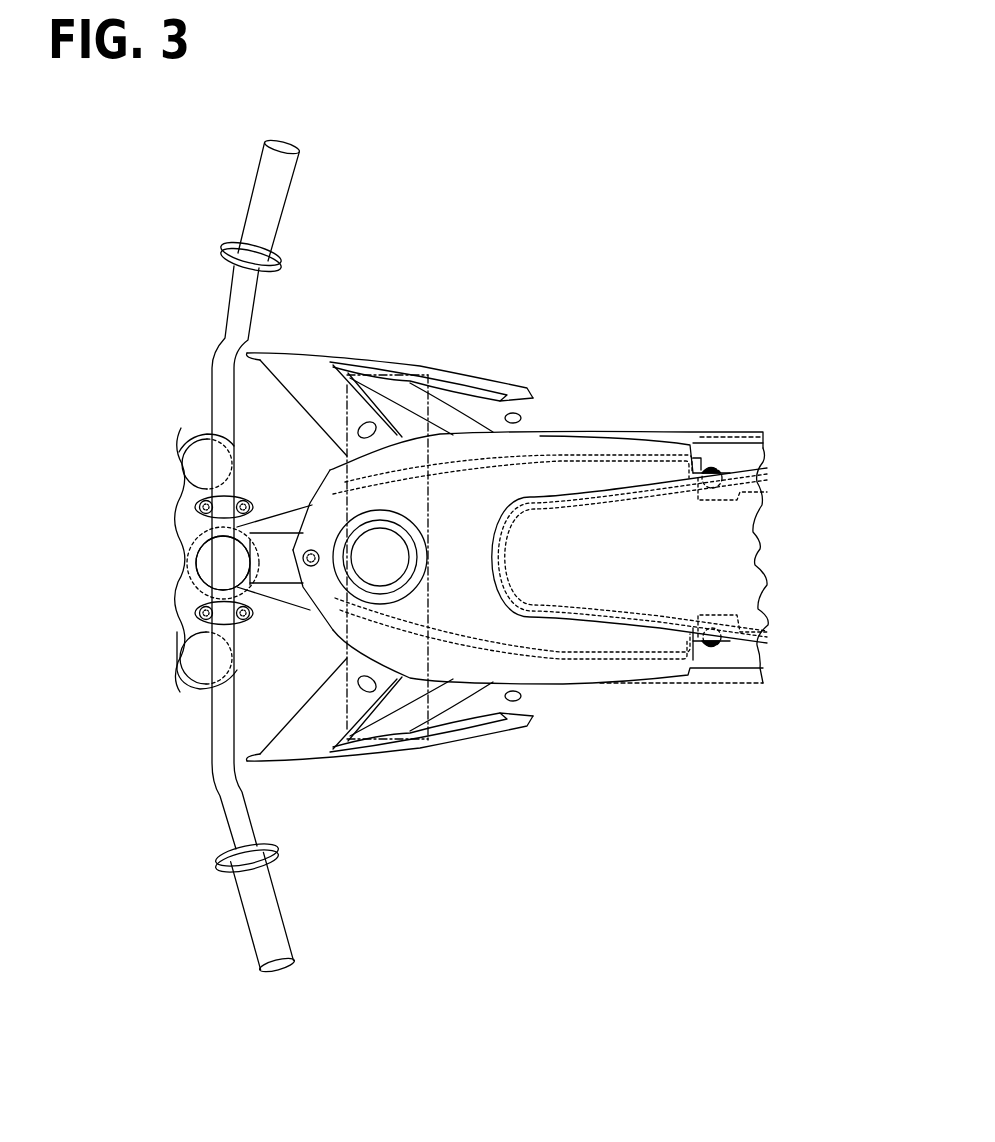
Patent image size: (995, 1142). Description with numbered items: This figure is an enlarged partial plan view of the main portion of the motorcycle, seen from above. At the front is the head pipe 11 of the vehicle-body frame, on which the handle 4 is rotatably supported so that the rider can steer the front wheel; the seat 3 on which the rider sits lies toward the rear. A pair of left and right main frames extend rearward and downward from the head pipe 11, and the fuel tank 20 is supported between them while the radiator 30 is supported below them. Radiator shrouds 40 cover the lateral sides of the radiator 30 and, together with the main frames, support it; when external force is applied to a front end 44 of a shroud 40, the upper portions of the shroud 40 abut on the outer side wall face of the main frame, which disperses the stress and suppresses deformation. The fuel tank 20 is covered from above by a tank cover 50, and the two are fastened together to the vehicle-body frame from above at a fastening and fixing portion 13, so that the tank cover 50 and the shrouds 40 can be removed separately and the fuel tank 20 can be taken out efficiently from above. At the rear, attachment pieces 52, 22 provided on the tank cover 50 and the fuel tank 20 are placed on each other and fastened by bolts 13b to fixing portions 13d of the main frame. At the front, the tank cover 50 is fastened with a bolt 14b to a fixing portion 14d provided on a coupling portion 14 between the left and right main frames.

The seat 3 is at (737, 557).
The handle 4 is at (222, 330).
The head pipe 11 is at (190, 552).
The fastening and fixing portion 13 is at (718, 457).
The bolt 13b is at (722, 470).
The fixing portion 13d is at (746, 488).
The coupling portion 14 is at (278, 547).
The bolt 14b is at (306, 568).
The fixing portion 14d is at (310, 549).
The fuel tank 20 is at (591, 453).
The attachment piece 22 is at (700, 463).
The radiator 30 is at (381, 375).
The radiator shroud 40 is at (460, 375).
The front end 44 is at (258, 352).
The tank cover 50 is at (540, 430).
The attachment piece 52 is at (703, 418).